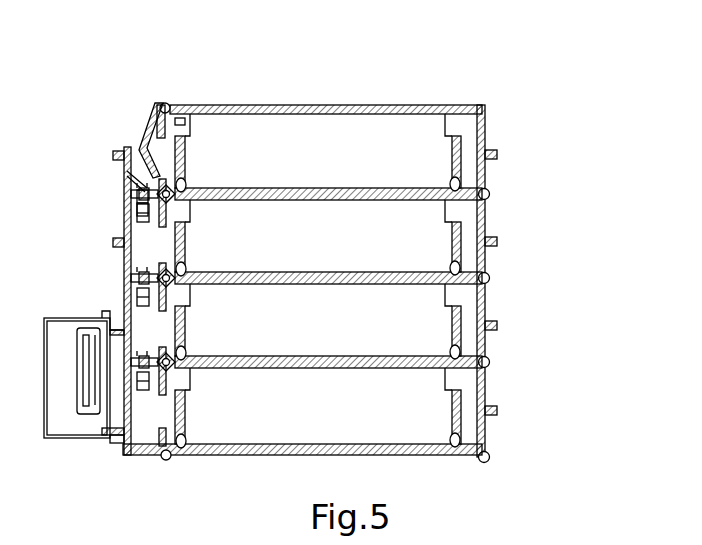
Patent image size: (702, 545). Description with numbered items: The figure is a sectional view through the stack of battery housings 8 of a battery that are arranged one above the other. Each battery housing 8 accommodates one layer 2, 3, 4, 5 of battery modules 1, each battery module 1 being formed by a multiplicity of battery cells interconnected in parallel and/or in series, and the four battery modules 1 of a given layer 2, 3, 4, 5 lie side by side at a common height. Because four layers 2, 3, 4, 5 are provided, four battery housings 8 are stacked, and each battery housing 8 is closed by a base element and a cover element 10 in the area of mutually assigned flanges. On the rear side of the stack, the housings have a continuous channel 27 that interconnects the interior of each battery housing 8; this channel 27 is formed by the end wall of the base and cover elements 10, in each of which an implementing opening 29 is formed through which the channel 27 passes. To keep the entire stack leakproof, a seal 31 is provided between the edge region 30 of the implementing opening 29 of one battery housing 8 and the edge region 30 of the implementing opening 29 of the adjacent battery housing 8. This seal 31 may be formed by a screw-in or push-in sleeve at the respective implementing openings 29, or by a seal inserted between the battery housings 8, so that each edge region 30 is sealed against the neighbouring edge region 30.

The battery module 1 is at (385, 135).
The layer 2 is at (560, 165).
The layer 3 is at (560, 249).
The layer 4 is at (560, 336).
The layer 5 is at (560, 429).
The battery housing 8 is at (509, 154).
The cover element 10 is at (484, 137).
The channel 27 is at (146, 163).
The implementing opening 29 is at (131, 156).
The edge region 30 is at (125, 201).
The seal 31 is at (127, 172).